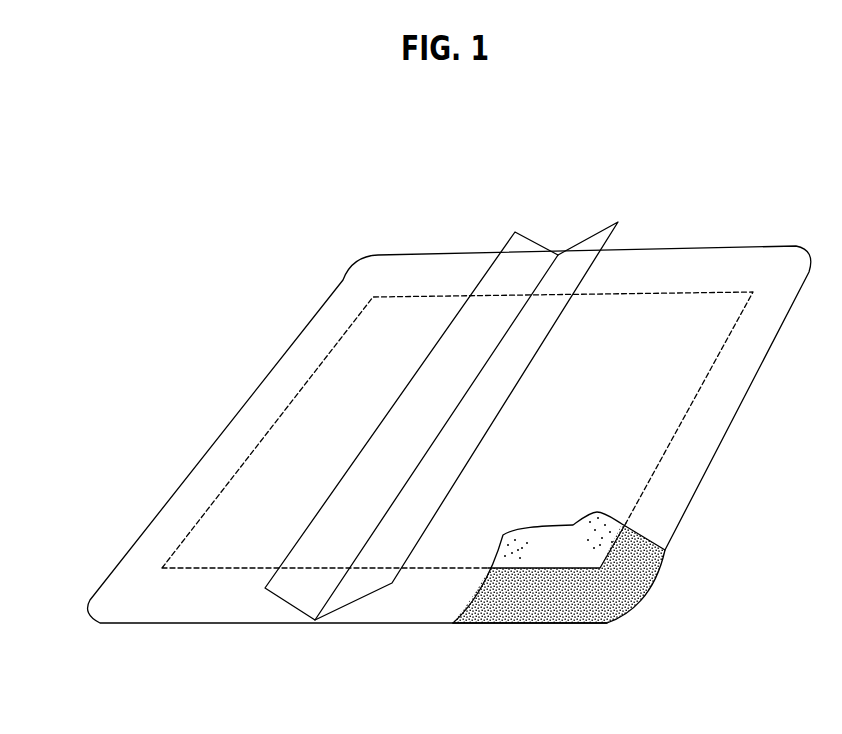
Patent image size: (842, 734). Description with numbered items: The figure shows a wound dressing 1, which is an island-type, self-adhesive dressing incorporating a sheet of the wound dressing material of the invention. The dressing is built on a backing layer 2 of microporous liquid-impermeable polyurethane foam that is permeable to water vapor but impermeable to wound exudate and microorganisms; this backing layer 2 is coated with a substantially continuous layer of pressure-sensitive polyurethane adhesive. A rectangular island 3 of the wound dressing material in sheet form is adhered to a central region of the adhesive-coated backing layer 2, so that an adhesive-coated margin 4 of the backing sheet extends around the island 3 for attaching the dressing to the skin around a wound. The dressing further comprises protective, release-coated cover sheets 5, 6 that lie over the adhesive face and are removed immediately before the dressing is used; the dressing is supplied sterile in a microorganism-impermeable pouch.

The wound dressing 1 is at (734, 233).
The backing layer 2 is at (655, 582).
The island 3 is at (579, 556).
The adhesive-coated margin 4 is at (517, 605).
The cover sheet 5 is at (528, 256).
The cover sheet 6 is at (583, 246).